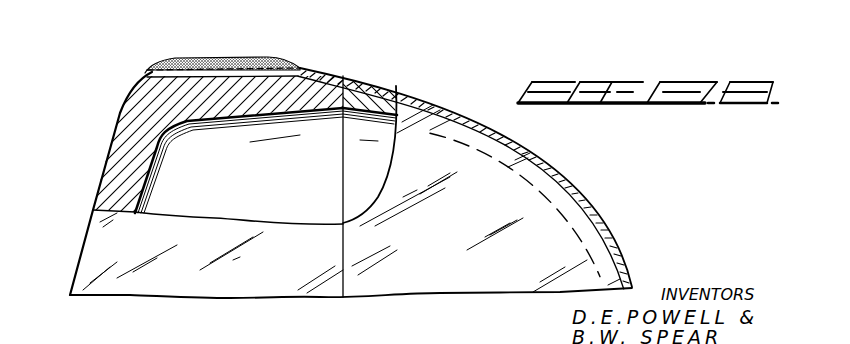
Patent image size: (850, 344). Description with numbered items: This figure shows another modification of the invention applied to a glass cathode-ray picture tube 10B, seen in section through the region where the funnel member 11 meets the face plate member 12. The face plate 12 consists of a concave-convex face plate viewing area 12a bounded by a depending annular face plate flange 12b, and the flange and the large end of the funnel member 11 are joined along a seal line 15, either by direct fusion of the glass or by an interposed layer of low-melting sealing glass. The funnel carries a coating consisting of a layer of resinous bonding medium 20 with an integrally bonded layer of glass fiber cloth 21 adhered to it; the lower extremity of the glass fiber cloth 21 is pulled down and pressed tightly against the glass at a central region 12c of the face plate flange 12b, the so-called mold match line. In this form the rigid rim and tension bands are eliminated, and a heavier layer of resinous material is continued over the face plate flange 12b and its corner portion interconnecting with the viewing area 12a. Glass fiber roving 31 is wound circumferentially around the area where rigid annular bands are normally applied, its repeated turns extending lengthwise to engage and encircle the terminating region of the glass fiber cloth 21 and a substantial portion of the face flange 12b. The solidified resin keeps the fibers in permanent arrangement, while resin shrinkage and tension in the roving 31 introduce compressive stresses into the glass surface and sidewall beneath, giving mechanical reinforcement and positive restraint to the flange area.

The tube 10B is at (642, 243).
The funnel member 11 is at (585, 223).
The face plate member 12 is at (86, 237).
The face plate viewing area 12a is at (128, 131).
The face plate flange 12b is at (200, 84).
The central region of face plate flange 12c is at (238, 74).
The seal line 15 is at (343, 295).
The layer of resinous bonding medium 20 is at (397, 92).
The glass fiber cloth 21 is at (474, 79).
The glass fiber roving 31 is at (262, 60).